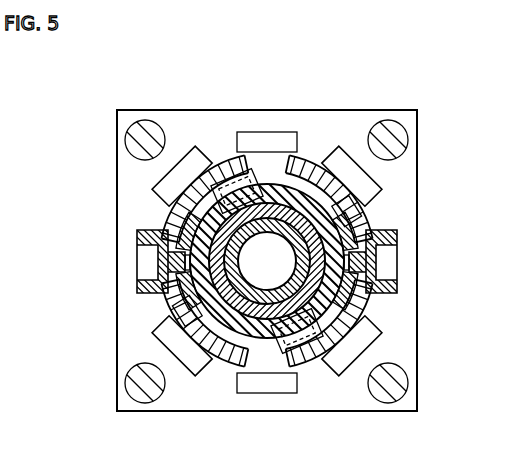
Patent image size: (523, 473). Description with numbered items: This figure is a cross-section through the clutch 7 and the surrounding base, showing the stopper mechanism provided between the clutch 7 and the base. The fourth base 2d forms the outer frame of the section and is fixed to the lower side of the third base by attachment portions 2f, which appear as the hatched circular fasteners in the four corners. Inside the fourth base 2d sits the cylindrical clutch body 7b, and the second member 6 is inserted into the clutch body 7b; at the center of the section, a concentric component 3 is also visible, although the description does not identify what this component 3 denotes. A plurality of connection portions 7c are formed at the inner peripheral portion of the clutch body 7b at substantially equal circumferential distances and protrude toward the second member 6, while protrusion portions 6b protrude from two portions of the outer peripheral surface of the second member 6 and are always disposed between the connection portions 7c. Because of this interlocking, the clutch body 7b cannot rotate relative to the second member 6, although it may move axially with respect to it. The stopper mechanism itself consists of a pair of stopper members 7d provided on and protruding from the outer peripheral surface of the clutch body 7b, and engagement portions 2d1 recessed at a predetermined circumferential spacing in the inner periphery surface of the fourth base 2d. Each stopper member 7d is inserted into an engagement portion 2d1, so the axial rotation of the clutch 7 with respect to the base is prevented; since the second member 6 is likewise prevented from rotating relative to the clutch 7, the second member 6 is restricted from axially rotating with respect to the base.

The fourth base 2d is at (117, 184).
The engagement portion 2d1 is at (150, 277).
The attachment portion 2f is at (148, 134).
The bearing 3 is at (261, 236).
The second member 6 is at (259, 261).
The protrusion portion 6b is at (261, 267).
The clutch 7 is at (201, 254).
The clutch body 7b is at (208, 285).
The connection portion 7c is at (266, 312).
The stopper member 7d is at (137, 240).